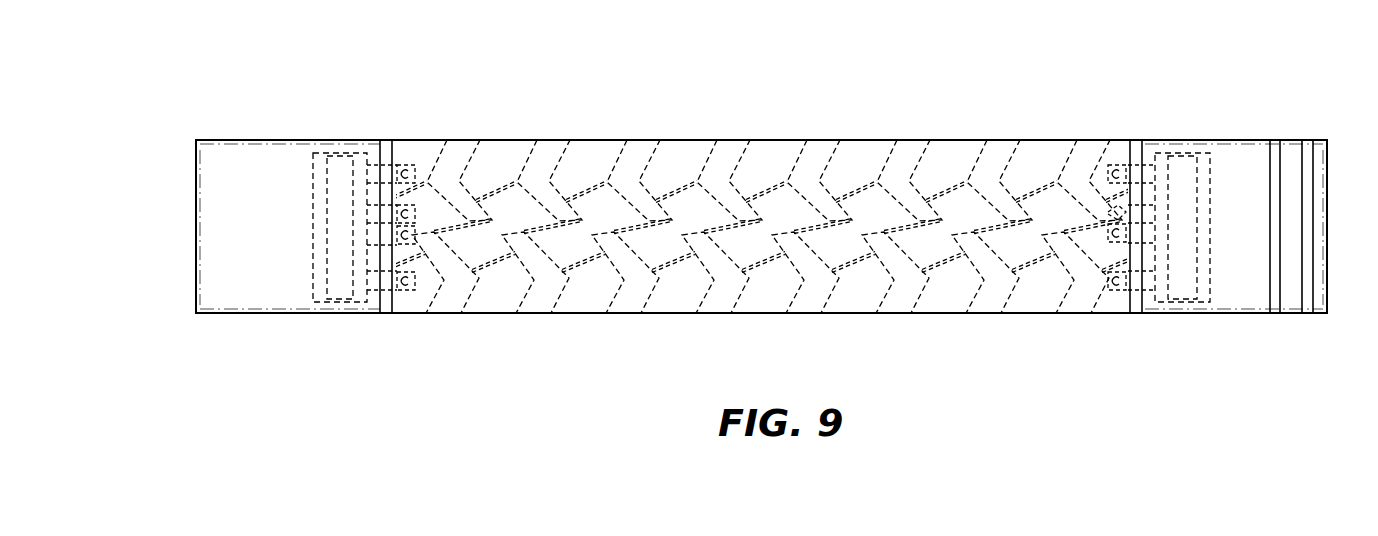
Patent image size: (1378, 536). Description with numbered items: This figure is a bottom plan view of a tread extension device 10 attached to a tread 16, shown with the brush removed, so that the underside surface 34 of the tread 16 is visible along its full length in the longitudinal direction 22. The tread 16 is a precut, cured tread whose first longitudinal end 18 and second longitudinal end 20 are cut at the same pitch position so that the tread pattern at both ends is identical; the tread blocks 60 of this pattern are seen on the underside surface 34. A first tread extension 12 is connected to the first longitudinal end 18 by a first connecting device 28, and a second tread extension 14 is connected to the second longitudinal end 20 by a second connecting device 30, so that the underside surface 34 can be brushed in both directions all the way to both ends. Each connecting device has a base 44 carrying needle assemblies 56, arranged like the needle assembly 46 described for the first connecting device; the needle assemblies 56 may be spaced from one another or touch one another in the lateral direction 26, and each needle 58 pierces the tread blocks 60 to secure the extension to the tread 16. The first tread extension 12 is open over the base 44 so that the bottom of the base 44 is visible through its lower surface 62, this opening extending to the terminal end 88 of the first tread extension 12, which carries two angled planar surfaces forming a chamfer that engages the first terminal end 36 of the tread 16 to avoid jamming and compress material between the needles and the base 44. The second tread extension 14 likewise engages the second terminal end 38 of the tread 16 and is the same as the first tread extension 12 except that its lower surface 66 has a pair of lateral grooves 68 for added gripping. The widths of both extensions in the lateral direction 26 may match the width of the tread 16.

The tread extension device 10 is at (1282, 62).
The first tread extension 12 is at (281, 238).
The second tread extension 14 is at (1290, 140).
The tread 16 is at (720, 140).
The first longitudinal end 18 is at (405, 300).
The second longitudinal end 20 is at (1118, 292).
The longitudinal direction 22 is at (628, 340).
The lateral direction 26 is at (170, 172).
The first connecting device 28 is at (290, 140).
The second connecting device 30 is at (1228, 140).
The underside surface 34 is at (590, 156).
The first terminal end 36 is at (380, 140).
The second terminal end 38 is at (1133, 312).
The base 44 is at (341, 300).
The needle assembly 46 is at (370, 298).
The needle assemblies 56 is at (412, 130).
The needle 58 is at (420, 172).
The tread blocks 60 is at (419, 292).
The lower surface 62 is at (238, 296).
The lower surface 66 is at (1248, 296).
The lateral grooves 68 is at (1308, 300).
The terminal end 88 is at (394, 259).